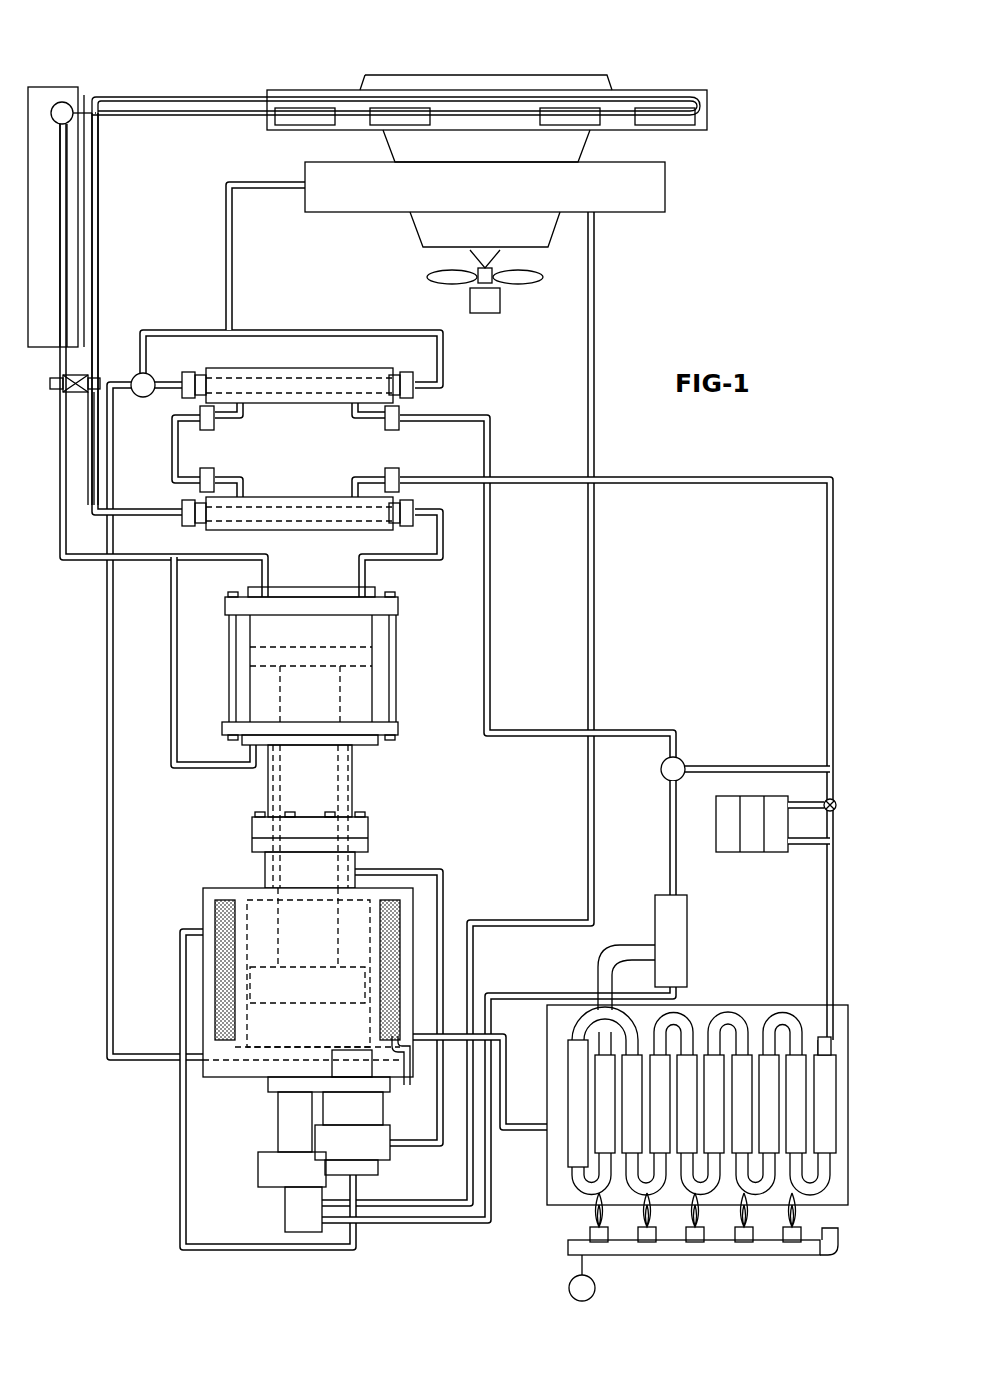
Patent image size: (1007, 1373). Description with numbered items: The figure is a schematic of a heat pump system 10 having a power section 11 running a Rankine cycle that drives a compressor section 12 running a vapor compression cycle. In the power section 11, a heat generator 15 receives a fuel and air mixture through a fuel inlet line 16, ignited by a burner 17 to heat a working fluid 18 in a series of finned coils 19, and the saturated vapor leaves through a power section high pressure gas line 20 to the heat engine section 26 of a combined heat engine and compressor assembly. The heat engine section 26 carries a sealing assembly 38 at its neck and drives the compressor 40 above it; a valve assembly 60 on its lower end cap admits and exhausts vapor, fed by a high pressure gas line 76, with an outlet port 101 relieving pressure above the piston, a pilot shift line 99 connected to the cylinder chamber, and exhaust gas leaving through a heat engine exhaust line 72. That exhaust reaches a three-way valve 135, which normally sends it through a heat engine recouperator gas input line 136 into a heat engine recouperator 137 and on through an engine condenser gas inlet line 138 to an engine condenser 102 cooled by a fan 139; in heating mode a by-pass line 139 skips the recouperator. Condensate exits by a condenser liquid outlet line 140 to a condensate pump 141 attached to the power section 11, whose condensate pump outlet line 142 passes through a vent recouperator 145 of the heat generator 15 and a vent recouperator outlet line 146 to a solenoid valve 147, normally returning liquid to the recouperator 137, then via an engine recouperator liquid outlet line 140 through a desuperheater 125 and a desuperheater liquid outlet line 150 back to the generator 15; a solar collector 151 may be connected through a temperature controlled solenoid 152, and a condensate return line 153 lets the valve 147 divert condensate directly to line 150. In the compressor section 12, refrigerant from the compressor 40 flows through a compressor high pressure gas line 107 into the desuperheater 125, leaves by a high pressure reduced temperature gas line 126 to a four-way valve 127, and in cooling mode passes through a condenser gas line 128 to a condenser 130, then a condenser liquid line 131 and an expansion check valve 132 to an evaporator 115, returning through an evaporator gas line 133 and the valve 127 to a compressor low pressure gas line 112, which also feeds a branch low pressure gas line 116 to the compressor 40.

The heat pump system 10 is at (70, 708).
The power section 11 is at (186, 898).
The compressor section 12 is at (385, 628).
The heat generator 15 is at (674, 1074).
The fuel inlet line 16 is at (832, 1232).
The burner 17 is at (675, 1257).
The working fluid 18 is at (727, 1023).
The finned coils 19 is at (783, 1023).
The power section high pressure gas line 20 is at (518, 1130).
The heat engine section 26 is at (418, 897).
The sealing assembly 38 is at (375, 832).
The compressor 40 is at (395, 671).
The valve assembly 60 is at (380, 1152).
The heat engine exhaust line 72 is at (107, 842).
The high pressure gas line 76 is at (405, 1082).
The pilot shift line 99 is at (178, 1160).
The outlet port 101 is at (362, 892).
The engine condenser 102 is at (668, 188).
The compressor high pressure gas line 107 is at (443, 560).
The compressor low pressure gas line 112 is at (270, 560).
The evaporator 115 is at (38, 85).
The branch low pressure gas line 116 is at (190, 770).
The desuperheater 125 is at (262, 497).
The high pressure reduced temperature gas line 126 is at (145, 515).
The four-way valve 127 is at (55, 383).
The condenser gas line 128 is at (100, 215).
The condenser 130 is at (705, 92).
The condenser liquid line 131 is at (180, 118).
The expansion check valve 132 is at (65, 108).
The evaporator gas line 133 is at (85, 352).
The three-way valve 135 is at (143, 398).
The heat engine recouperator gas input line 136 is at (170, 378).
The heat engine recouperator 137 is at (270, 403).
The engine condenser gas inlet line 138 is at (233, 248).
The fan 139 is at (178, 330).
The condenser liquid outlet line 140 is at (178, 448).
The condensate pump 141 is at (300, 1218).
The condensate pump outlet line 142 is at (416, 1225).
The vent recouperator 145 is at (658, 935).
The vent recouperator outlet line 146 is at (632, 730).
The solenoid valve 147 is at (678, 762).
The desuperheater liquid outlet line 150 is at (448, 478).
The solar collector 151 is at (728, 835).
The temperature controlled solenoid 152 is at (825, 800).
The condensate return line 153 is at (747, 765).